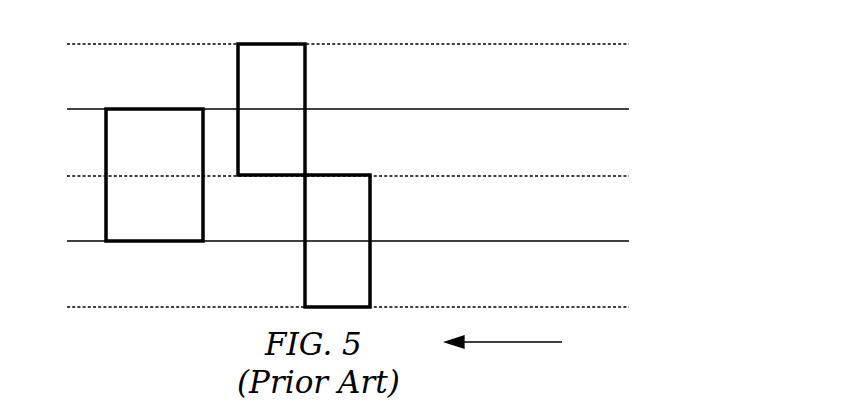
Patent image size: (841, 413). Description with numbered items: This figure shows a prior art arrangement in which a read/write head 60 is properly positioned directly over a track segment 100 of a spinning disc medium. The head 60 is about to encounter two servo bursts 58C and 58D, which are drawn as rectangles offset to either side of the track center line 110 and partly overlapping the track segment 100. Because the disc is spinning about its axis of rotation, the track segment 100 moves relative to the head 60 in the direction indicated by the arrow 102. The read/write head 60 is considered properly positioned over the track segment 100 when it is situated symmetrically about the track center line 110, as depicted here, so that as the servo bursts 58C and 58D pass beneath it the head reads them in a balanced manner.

The read/write head 60 is at (107, 163).
The servo burst 58C is at (293, 130).
The servo burst 58D is at (317, 228).
The track segment 100 is at (637, 110).
The track center line 110 is at (537, 44).
The arrow 102 is at (532, 342).